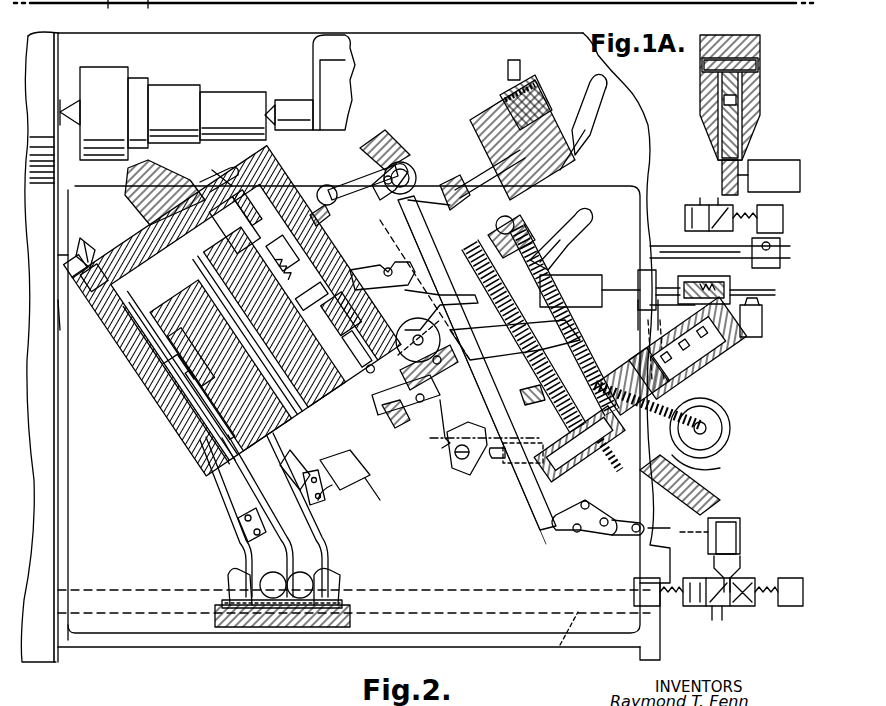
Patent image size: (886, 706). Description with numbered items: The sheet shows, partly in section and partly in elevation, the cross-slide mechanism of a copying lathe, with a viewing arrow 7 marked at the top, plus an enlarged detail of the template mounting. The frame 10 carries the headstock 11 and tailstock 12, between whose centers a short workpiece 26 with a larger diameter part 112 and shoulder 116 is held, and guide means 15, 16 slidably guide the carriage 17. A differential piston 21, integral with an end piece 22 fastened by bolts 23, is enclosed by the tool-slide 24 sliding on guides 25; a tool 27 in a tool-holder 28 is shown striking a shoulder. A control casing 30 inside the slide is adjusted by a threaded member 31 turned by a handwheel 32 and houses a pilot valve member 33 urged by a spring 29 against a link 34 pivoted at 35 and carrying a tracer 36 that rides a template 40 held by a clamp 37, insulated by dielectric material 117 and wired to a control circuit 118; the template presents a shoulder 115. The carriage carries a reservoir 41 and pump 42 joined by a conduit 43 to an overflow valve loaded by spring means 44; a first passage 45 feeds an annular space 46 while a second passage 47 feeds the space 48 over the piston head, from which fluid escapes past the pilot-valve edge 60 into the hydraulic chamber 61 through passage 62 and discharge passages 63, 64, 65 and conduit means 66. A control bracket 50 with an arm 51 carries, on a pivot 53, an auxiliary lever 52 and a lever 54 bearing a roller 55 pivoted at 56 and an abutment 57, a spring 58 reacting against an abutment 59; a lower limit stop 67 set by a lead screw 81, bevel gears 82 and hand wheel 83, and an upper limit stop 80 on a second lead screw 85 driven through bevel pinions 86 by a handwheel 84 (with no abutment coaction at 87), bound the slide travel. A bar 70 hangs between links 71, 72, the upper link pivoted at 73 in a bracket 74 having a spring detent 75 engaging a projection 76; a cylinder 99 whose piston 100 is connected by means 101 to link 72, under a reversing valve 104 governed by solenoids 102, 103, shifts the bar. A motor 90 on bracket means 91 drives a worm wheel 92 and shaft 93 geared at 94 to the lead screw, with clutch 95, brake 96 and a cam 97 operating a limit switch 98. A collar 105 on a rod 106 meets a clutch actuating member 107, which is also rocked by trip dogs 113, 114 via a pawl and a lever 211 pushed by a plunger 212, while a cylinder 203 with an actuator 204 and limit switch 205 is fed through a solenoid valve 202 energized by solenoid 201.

In FIG. 2, the section line 7 is at (300, 15).
In FIG. 2, the frame 10 is at (190, 36).
In FIG. 2, the headstock 11 is at (55, 55).
In FIG. 2, the tailstock 12 is at (342, 66).
In FIG. 2, the guide means 15 is at (560, 648).
In FIG. 2, the guide means 16 is at (55, 250).
In FIG. 2, the carriage 17 is at (168, 650).
In FIG. 2, the differential piston 21 is at (128, 340).
In FIG. 2, the end piece 22 is at (338, 500).
In FIG. 2, the bolts 23 is at (240, 545).
In FIG. 2, the tool-slide 24 is at (112, 255).
In FIG. 2, the guides 25 is at (92, 240).
In FIG. 2, the workpiece 26 is at (182, 86).
In FIG. 2, the tool 27 is at (150, 170).
In FIG. 2, the tool-holder 28 is at (196, 172).
In FIG. 2, the spring 29 is at (262, 340).
In FIG. 2, the control casing 30 is at (395, 297).
In FIG. 2, the threaded member 31 is at (265, 225).
In FIG. 2, the handwheel 32 is at (238, 150).
In FIG. 2, the pilot valve member 33 is at (295, 378).
In FIG. 2, the link 34 is at (350, 430).
In FIG. 2, the pivot 35 is at (385, 470).
In FIG. 2, the tracer member 36 is at (366, 497).
In FIG. 1A, the template clamp 37 is at (700, 125).
In FIG. 2, the template 40 is at (500, 432).
In FIG. 1A, the template 40 is at (722, 172).
In FIG. 2, the hydraulic-fluid reservoir 41 is at (328, 585).
In FIG. 2, the pump 42 is at (265, 630).
In FIG. 2, the conduit 43 is at (280, 540).
In FIG. 2, the spring means 44 is at (240, 528).
In FIG. 2, the first passage 45 is at (170, 440).
In FIG. 2, the annular space 46 is at (155, 360).
In FIG. 2, the second passage 47 is at (185, 460).
In FIG. 2, the head-end space 48 is at (72, 320).
In FIG. 2, the control bracket 50 is at (450, 450).
In FIG. 2, the arm 51 is at (478, 340).
In FIG. 2, the auxiliary lever 52 is at (508, 370).
In FIG. 2, the pivot 53 is at (428, 398).
In FIG. 2, the auxiliary lever 54 is at (408, 340).
In FIG. 2, the roller 55 is at (452, 300).
In FIG. 2, the pivot 56 is at (428, 328).
In FIG. 2, the abutment 57 is at (445, 370).
In FIG. 2, the spring 58 is at (408, 440).
In FIG. 2, the abutment 59 is at (392, 460).
In FIG. 2, the lower pilot-valve edge 60 is at (325, 390).
In FIG. 2, the hydraulic chamber 61 is at (300, 400).
In FIG. 2, the passage 62 is at (290, 355).
In FIG. 2, the discharge passage 63 is at (372, 262).
In FIG. 2, the discharge passage 64 is at (142, 240).
In FIG. 2, the discharge passage 65 is at (165, 420).
In FIG. 2, the conduit means 66 is at (250, 560).
In FIG. 2, the lower limit stop 67 is at (530, 412).
In FIG. 2, the bar 70 is at (527, 480).
In FIG. 2, the upper link 71 is at (365, 185).
In FIG. 2, the link 72 is at (555, 530).
In FIG. 2, the pivot 73 is at (412, 172).
In FIG. 2, the bracket 74 is at (410, 150).
In FIG. 2, the spring-detent member 75 is at (395, 128).
In FIG. 2, the projection 76 is at (400, 135).
In FIG. 2, the upper limit stop 80 is at (496, 300).
In FIG. 2, the lead screw 81 is at (590, 340).
In FIG. 2, the bevel gears 82 is at (530, 230).
In FIG. 2, the hand wheel 83 is at (578, 225).
In FIG. 2, the handwheel 84 is at (598, 118).
In FIG. 2, the second lead screw 85 is at (590, 291).
In FIG. 2, the bevel pinions 86 is at (448, 195).
In FIG. 2, the abutment means location 87 is at (548, 98).
In FIG. 2, the electric motor 90 is at (732, 435).
In FIG. 2, the bracket means 91 is at (742, 352).
In FIG. 2, the worm wheel 92 is at (660, 370).
In FIG. 2, the shaft 93 is at (606, 466).
In FIG. 2, the geared engagement 94 is at (596, 478).
In FIG. 2, the solenoid-operated clutch means 95 is at (718, 412).
In FIG. 2, the solenoid-operated brake means 96 is at (740, 385).
In FIG. 2, the cam 97 is at (640, 400).
In FIG. 2, the limit switch 98 is at (700, 488).
In FIG. 2, the hydraulic-cylinder mechanism 99 is at (738, 518).
In FIG. 2, the piston 100 is at (742, 532).
In FIG. 2, the connecting means 101 is at (612, 538).
In FIG. 2, the solenoid 102 is at (655, 576).
In FIG. 2, the solenoid 103 is at (790, 576).
In FIG. 2, the reversing-valve means 104 is at (745, 578).
In FIG. 2, the collar 105 is at (775, 244).
In FIG. 2, the rod 106 is at (700, 236).
In FIG. 2, the clutch actuating member 107 is at (618, 280).
In FIG. 2, the larger diameter part 112 is at (116, 58).
In FIG. 2, the trip dog 113 is at (345, 216).
In FIG. 2, the lower trip dog 114 is at (455, 468).
In FIG. 2, the shoulder 115 is at (334, 505).
In FIG. 2, the shoulder 116 is at (130, 78).
In FIG. 1A, the dielectric material 117 is at (745, 118).
In FIG. 1A, the control circuit 118 is at (790, 158).
In FIG. 2, the CARRIAGE STOP solenoid 201 is at (783, 218).
In FIG. 2, the solenoid valve 202 is at (702, 205).
In FIG. 2, the single acting cylinder 203 is at (698, 320).
In FIG. 2, the actuator 204 is at (760, 292).
In FIG. 2, the limit switch 205 is at (762, 322).
In FIG. 2, the lever 211 is at (640, 320).
In FIG. 2, the plunger 212 is at (497, 462).